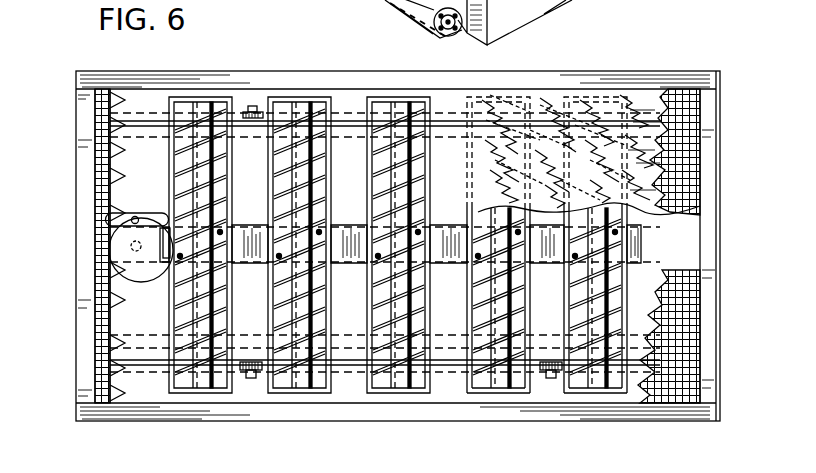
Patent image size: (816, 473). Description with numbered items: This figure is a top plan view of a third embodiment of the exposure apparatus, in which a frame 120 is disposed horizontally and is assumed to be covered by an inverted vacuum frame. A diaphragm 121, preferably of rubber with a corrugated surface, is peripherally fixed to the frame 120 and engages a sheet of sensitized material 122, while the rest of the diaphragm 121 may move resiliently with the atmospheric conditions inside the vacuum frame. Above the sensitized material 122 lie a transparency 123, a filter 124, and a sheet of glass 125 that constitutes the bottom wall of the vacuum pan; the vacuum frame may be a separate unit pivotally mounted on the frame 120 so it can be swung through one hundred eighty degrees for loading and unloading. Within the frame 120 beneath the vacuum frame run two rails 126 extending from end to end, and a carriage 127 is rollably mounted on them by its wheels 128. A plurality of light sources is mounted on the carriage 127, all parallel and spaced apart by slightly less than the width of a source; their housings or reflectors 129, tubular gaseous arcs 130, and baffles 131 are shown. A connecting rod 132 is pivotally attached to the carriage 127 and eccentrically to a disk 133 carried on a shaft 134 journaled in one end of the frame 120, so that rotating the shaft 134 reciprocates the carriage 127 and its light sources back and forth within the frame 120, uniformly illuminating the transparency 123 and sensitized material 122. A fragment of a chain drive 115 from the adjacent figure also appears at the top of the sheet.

The drive chain and sprocket 115 is at (433, 30).
The frame 120 is at (302, 80).
The diaphragm 121 is at (690, 95).
The sheet of sensitized material 122 is at (652, 100).
The transparency 123 is at (610, 100).
The filter 124 is at (552, 110).
The sheet of glass 125 is at (505, 108).
The rails 126 is at (135, 123).
The carriage 127 is at (451, 326).
The wheels 128 is at (248, 378).
The housings or reflectors 129 is at (192, 97).
The tubular gaseous arcs 130 is at (195, 170).
The baffles 131 is at (183, 200).
The connecting rod 132 is at (135, 230).
The disk 133 is at (130, 244).
The shaft 134 is at (130, 250).